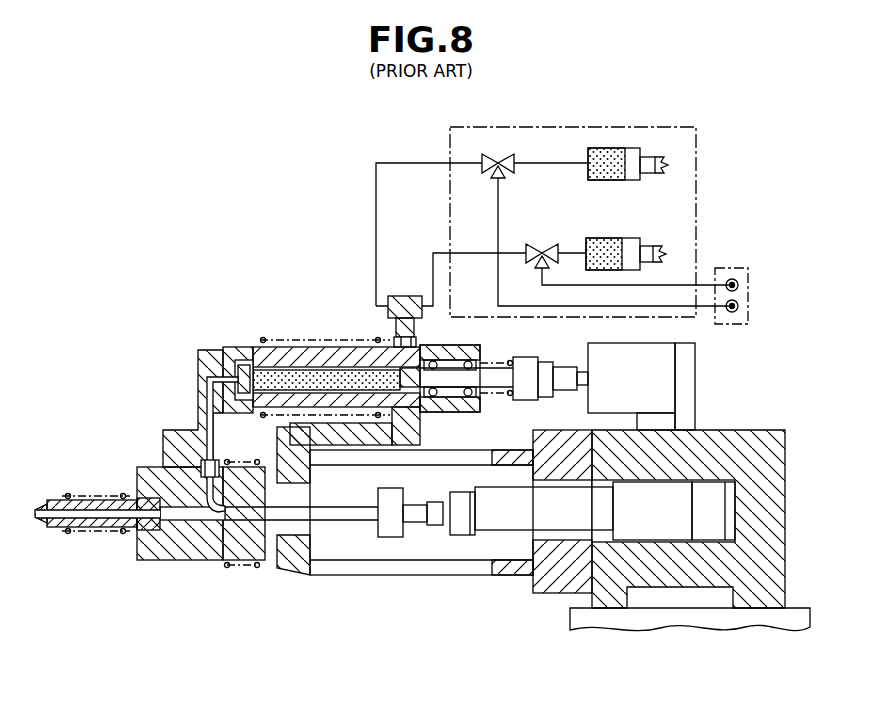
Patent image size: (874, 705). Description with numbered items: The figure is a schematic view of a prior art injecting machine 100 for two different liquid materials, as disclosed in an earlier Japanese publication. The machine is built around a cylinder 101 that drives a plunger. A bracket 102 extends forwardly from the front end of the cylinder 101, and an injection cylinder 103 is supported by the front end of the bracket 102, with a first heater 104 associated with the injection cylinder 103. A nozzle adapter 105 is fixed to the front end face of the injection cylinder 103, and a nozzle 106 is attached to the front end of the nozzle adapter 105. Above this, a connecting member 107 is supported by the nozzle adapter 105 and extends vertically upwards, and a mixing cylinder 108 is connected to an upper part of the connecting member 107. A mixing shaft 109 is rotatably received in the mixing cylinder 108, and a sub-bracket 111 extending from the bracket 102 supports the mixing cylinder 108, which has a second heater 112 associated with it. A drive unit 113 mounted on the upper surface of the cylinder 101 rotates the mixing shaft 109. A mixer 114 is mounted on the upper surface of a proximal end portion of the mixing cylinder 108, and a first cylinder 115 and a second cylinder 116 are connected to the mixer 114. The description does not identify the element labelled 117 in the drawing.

The injecting machine 100 is at (173, 201).
The cylinder 101 is at (733, 430).
The bracket 102 is at (505, 568).
The injection cylinder 103 is at (243, 567).
The first heater 104 is at (258, 570).
The nozzle adapter 105 is at (172, 553).
The nozzle 106 is at (83, 533).
The connecting member 107 is at (180, 432).
The mixing cylinder 108 is at (292, 352).
The mixing shaft 109 is at (357, 375).
The sub-bracket 111 is at (413, 426).
The second heater 112 is at (323, 340).
The drive unit 113 is at (652, 373).
The mixer 114 is at (405, 296).
The first cylinder 115 is at (657, 155).
The second cylinder 116 is at (655, 243).
The supply pipe 117 is at (222, 348).